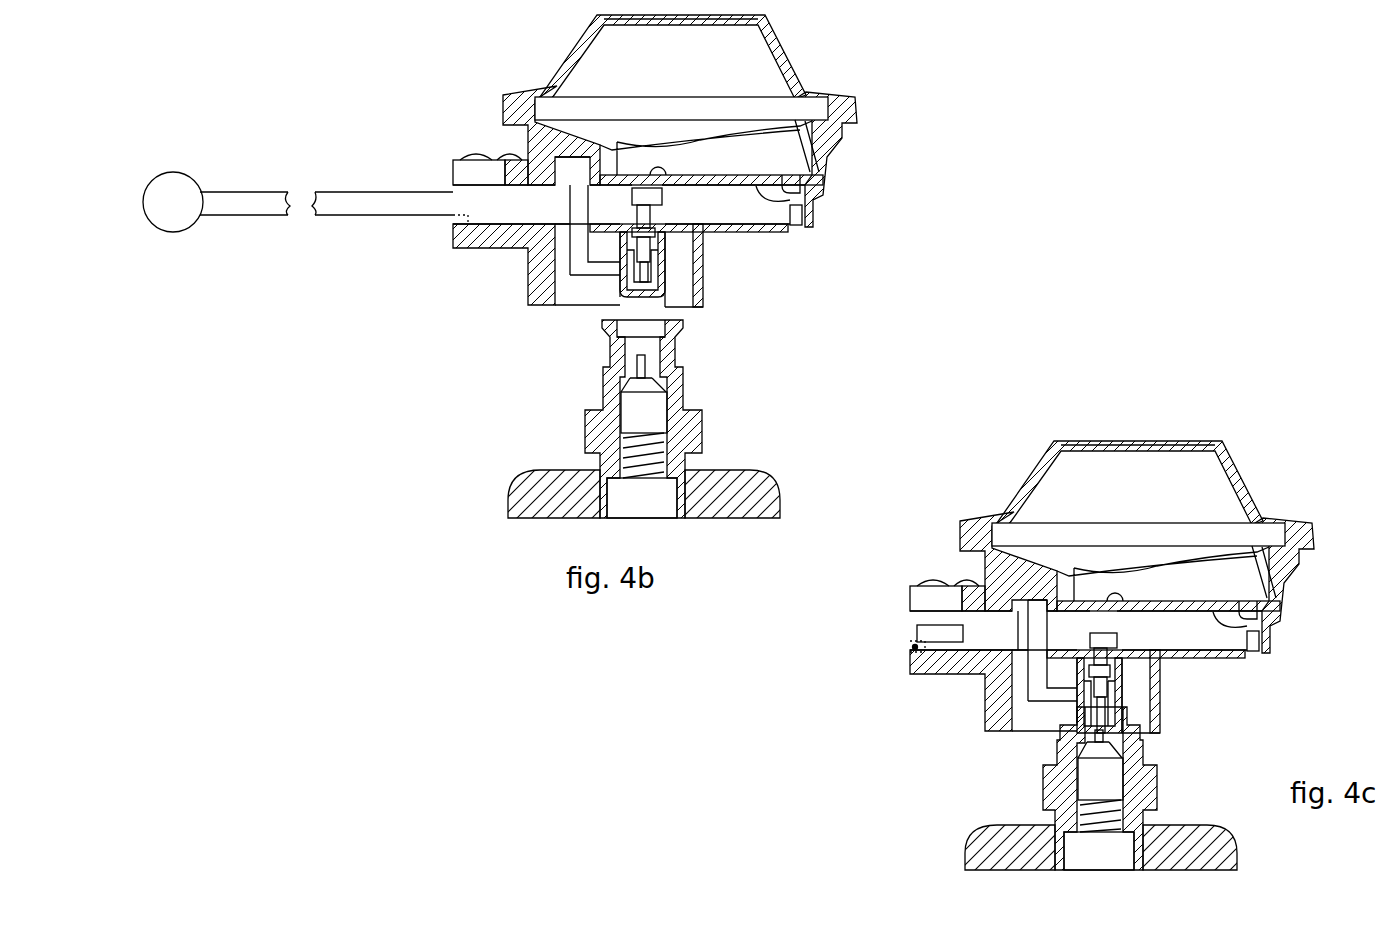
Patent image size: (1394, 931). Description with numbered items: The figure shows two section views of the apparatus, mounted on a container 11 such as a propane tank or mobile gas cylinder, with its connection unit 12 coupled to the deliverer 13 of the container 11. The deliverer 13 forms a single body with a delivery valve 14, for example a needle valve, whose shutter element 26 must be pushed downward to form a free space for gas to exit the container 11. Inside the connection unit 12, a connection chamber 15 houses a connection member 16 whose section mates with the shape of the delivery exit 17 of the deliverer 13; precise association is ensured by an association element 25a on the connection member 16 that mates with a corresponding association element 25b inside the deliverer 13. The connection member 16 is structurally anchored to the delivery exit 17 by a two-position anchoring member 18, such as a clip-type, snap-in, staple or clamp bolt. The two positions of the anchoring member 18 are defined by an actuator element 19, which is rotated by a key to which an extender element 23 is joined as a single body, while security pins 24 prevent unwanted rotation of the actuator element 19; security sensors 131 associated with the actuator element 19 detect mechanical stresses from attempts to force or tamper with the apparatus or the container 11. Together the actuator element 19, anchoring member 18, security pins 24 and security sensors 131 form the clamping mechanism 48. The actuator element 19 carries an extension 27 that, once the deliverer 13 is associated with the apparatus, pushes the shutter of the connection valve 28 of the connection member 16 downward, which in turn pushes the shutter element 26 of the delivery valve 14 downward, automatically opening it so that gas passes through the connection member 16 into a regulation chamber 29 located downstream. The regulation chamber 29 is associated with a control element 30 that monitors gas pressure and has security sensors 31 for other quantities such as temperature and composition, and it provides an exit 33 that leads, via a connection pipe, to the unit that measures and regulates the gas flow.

In FIG. 4B, the container 11 is at (753, 491).
In FIG. 4C, the container 11 is at (1109, 828).
In FIG. 4B, the connection unit 12 is at (878, 132).
In FIG. 4C, the connection unit 12 is at (1335, 555).
In FIG. 4B, the deliverer 13 is at (645, 502).
In FIG. 4C, the deliverer 13 is at (1106, 870).
In FIG. 4B, the delivery valve 14 is at (699, 267).
In FIG. 4C, the delivery valve 14 is at (1123, 807).
In FIG. 4B, the connection chamber 15 is at (555, 269).
In FIG. 4C, the connection chamber 15 is at (1112, 622).
In FIG. 4B, the connection member 16 is at (625, 292).
In FIG. 4C, the connection member 16 is at (1055, 713).
In FIG. 4B, the delivery exit 17 is at (668, 328).
In FIG. 4B, the anchoring member 18 is at (573, 296).
In FIG. 4C, the anchoring member 18 is at (999, 678).
In FIG. 4B, the actuator element 19 is at (502, 212).
In FIG. 4C, the actuator element 19 is at (1086, 663).
In FIG. 4B, the extender element 23 is at (333, 202).
In FIG. 4B, the security pins 24 is at (473, 171).
In FIG. 4C, the security pins 24 is at (906, 590).
In FIG. 4B, the association element 25a is at (648, 272).
In FIG. 4C, the association element 25a is at (1159, 716).
In FIG. 4B, the association element 25b is at (643, 366).
In FIG. 4C, the association element 25b is at (1162, 746).
In FIG. 4B, the shutter element 26 is at (633, 415).
In FIG. 4C, the shutter element 26 is at (1061, 795).
In FIG. 4B, the extension 27 is at (645, 195).
In FIG. 4C, the extension 27 is at (1126, 633).
In FIG. 4B, the connection valve 28 is at (650, 233).
In FIG. 4C, the connection valve 28 is at (1150, 672).
In FIG. 4B, the regulation chamber 29 is at (763, 186).
In FIG. 4C, the regulation chamber 29 is at (1277, 611).
In FIG. 4B, the control element 30 is at (762, 70).
In FIG. 4C, the control element 30 is at (1148, 484).
In FIG. 4B, the security sensors 31 is at (800, 215).
In FIG. 4C, the security sensors 31 is at (1289, 651).
In FIG. 4B, the exit 33 is at (474, 159).
In FIG. 4C, the exit 33 is at (938, 556).
In FIG. 4B, the clamping mechanism 48 is at (405, 222).
In FIG. 4C, the clamping mechanism 48 is at (857, 656).
In FIG. 4B, the security sensors 131 is at (441, 254).
In FIG. 4C, the security sensors 131 is at (897, 678).